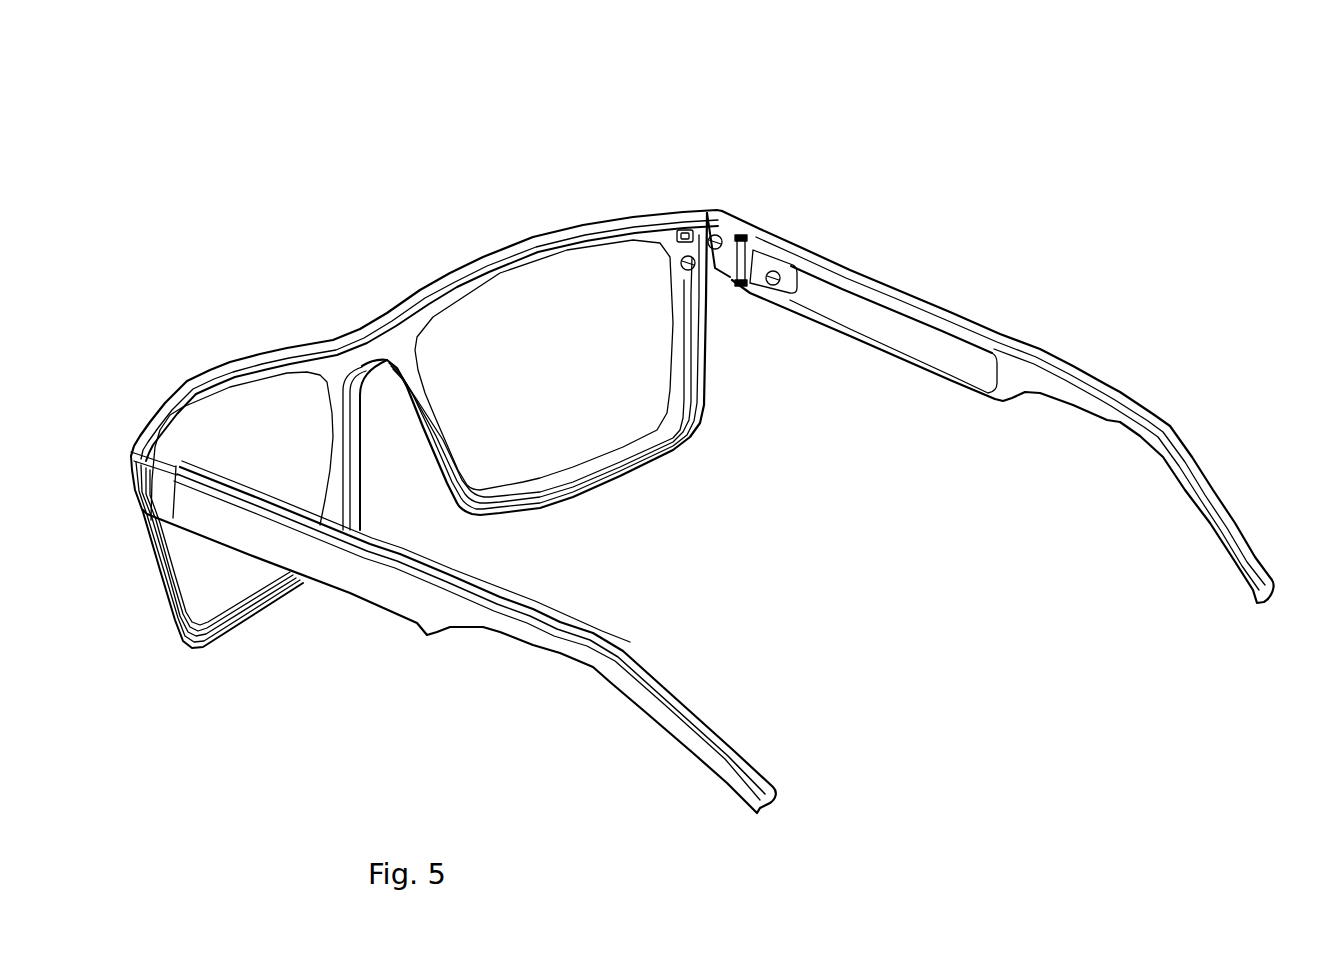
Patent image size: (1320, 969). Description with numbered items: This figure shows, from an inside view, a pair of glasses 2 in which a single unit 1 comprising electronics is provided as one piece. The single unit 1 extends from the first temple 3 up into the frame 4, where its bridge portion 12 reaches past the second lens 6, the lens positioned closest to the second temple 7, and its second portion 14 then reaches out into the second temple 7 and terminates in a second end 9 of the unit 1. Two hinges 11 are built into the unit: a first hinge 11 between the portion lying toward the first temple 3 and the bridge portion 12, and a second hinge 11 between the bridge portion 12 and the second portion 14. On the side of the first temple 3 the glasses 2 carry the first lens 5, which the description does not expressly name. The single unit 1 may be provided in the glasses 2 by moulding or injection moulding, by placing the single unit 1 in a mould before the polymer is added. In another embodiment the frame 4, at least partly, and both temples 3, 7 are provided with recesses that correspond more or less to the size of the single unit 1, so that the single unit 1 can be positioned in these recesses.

The single unit 1 is at (703, 233).
The pair of glasses 2 is at (626, 209).
The first temple 3 is at (397, 600).
The frame 4 is at (335, 372).
The left lens 5 is at (233, 433).
The second lens 6 is at (545, 320).
The second temple 7 is at (1018, 373).
The second end 9 is at (990, 380).
The hinge 11 is at (743, 286).
The bridge portion 12 is at (424, 320).
The second portion 14 is at (900, 325).